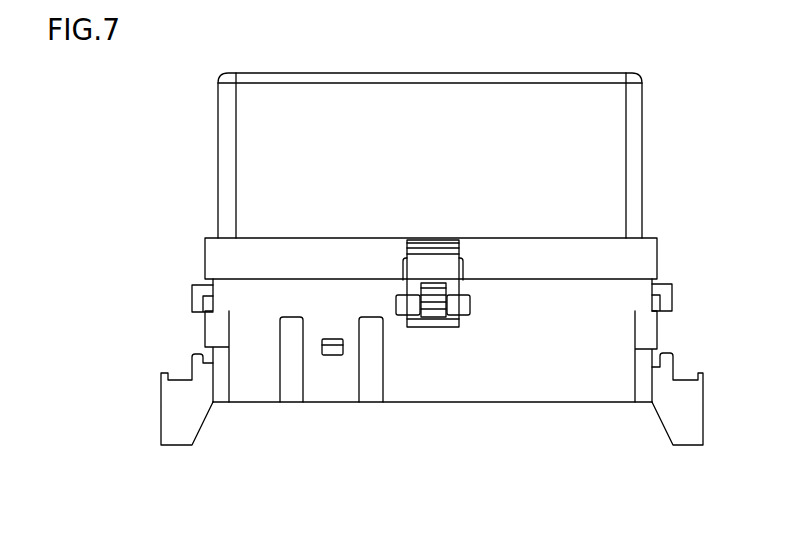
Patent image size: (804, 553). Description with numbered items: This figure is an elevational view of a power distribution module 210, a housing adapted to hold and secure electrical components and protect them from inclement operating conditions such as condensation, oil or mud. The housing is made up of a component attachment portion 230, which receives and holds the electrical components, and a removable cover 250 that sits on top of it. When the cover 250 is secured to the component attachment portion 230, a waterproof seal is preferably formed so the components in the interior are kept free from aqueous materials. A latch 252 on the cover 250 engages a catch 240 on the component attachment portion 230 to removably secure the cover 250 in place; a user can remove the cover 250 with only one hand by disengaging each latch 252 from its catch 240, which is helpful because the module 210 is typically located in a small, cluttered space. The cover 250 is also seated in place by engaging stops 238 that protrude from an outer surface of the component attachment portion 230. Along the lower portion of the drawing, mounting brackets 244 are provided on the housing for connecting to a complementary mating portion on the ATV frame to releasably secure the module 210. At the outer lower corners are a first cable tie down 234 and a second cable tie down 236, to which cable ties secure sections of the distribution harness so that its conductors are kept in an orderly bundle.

The power distribution module 210 is at (184, 147).
The removable cover 250 is at (643, 118).
The component attachment portion 230 is at (530, 393).
The stops 238 is at (197, 302).
The first cable tie down 234 is at (160, 410).
The second cable tie down 236 is at (703, 400).
The mounting brackets 244 is at (370, 393).
The latch 252 is at (452, 276).
The catch 240 is at (463, 310).